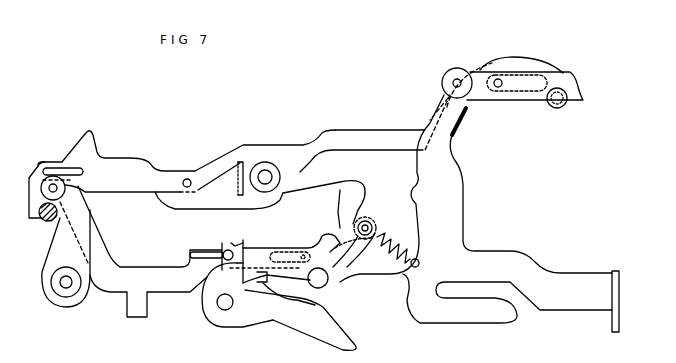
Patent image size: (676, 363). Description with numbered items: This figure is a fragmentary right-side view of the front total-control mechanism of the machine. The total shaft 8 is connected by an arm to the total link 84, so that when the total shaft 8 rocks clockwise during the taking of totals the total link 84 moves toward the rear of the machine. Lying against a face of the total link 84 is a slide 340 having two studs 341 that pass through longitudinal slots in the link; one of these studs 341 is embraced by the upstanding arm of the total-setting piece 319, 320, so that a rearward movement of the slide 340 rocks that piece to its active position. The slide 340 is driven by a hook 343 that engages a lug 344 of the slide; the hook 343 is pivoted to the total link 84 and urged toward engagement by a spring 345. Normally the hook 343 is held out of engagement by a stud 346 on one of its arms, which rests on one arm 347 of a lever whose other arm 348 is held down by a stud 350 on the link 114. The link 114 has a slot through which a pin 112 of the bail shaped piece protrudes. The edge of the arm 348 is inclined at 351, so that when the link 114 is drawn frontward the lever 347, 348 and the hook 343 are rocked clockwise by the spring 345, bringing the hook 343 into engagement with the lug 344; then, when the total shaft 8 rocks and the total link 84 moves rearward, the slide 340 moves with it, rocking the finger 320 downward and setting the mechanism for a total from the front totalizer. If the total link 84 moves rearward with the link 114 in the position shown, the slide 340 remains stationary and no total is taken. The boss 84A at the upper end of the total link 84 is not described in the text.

The total shaft 8 is at (70, 283).
The pin 112 is at (45, 170).
The stud 350 is at (190, 205).
The arm 348 is at (202, 200).
The inclined edge 351 is at (190, 207).
The link 114 is at (335, 134).
The studs 341 is at (222, 253).
The slide 340 is at (267, 248).
The lug 344 is at (306, 292).
The hook 343 is at (312, 315).
The total-setting piece 319 is at (212, 310).
The finger 320 is at (312, 315).
The stud 346 is at (382, 210).
The arm 347 is at (403, 240).
The spring 345 is at (407, 255).
The total link 84 is at (450, 228).
The boss 84A is at (465, 80).